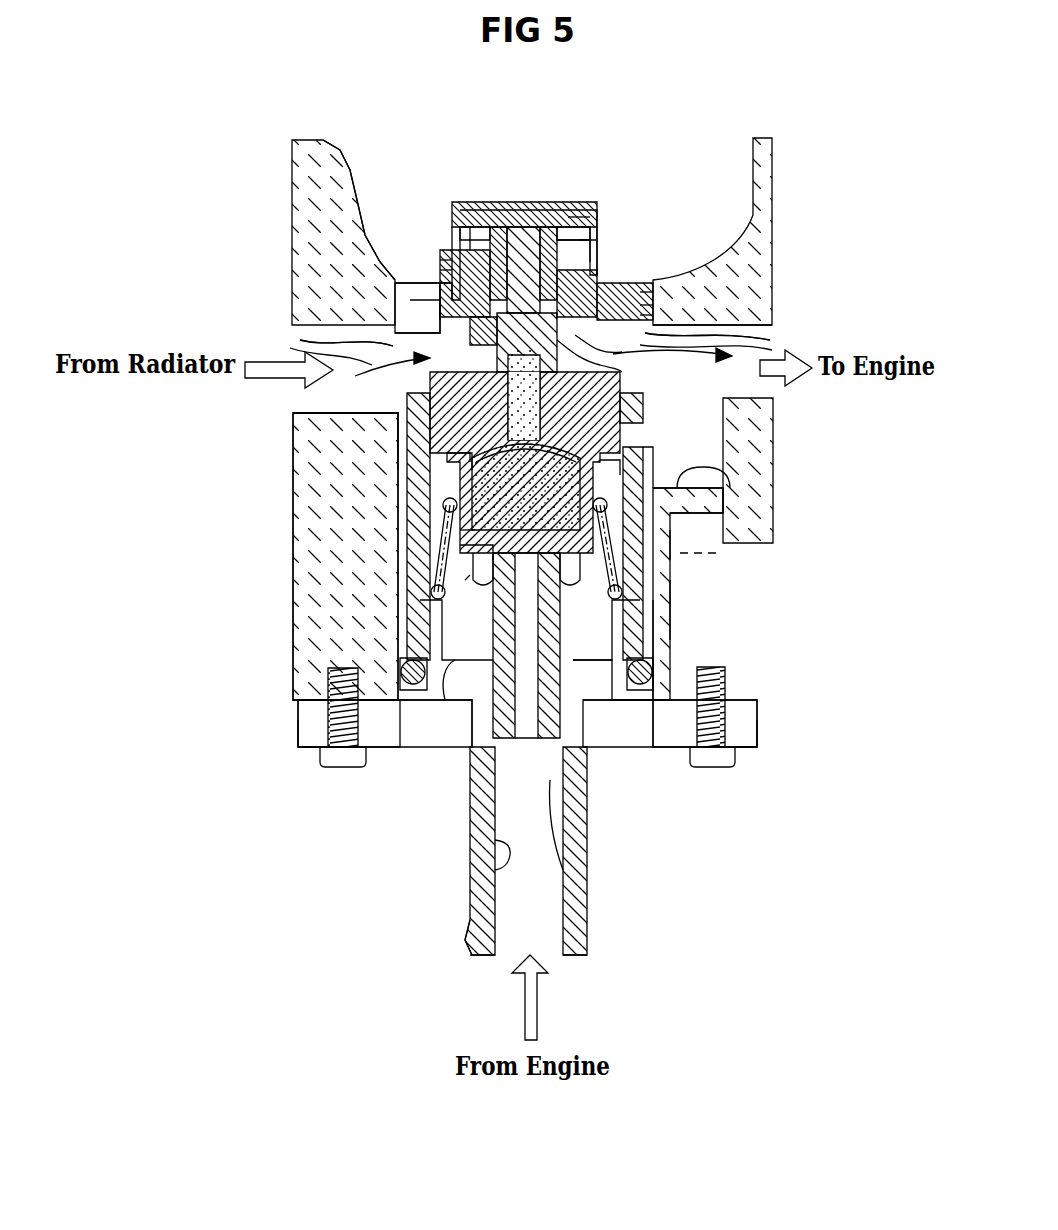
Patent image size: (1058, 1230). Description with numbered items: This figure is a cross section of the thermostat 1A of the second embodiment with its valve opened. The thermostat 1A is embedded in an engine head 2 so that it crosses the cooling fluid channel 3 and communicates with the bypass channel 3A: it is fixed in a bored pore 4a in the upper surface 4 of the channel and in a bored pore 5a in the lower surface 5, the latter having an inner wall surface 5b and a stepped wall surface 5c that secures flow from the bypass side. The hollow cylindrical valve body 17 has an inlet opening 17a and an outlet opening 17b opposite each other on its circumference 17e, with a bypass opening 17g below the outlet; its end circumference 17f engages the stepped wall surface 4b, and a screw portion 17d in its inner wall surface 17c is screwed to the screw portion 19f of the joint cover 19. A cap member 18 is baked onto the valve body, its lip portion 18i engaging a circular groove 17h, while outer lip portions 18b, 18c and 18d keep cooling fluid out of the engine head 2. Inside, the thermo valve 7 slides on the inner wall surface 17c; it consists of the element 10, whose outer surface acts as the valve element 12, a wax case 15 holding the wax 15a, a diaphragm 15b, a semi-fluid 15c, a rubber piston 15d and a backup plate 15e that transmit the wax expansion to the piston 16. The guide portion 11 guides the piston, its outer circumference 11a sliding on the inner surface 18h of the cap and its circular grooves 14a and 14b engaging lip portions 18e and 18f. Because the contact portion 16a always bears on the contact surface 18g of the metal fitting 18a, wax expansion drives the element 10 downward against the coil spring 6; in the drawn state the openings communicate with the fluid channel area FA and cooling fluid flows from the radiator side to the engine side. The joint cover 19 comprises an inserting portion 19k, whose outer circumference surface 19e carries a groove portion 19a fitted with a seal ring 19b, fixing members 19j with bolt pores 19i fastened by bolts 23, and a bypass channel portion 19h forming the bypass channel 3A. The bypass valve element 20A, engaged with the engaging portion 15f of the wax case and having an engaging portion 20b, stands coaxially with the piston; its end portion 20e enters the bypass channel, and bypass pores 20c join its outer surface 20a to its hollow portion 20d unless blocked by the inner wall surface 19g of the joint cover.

The thermostat 1A is at (370, 855).
The engine head 2 is at (770, 168).
The cooling fluid channel 3 is at (825, 318).
The bypass channel 3A is at (575, 922).
The upper surface 4 is at (300, 338).
The bored pore 4a is at (413, 317).
The stepped wall surface 4b is at (440, 268).
The lower surface 5 is at (330, 420).
The bored pore 5a is at (672, 625).
The inner wall surface 5b is at (397, 452).
The stepped wall surface 5c is at (690, 487).
The coil spring 6 is at (703, 553).
The thermo valve 7 is at (438, 592).
The element 10 is at (406, 396).
The valve element 12 is at (640, 433).
The guide portion 11 is at (465, 235).
The outer circumference 11a is at (557, 345).
The circular groove 14a is at (452, 268).
The circular groove 14b is at (492, 345).
The wax case 15 is at (447, 535).
The wax 15a is at (653, 527).
The diaphragm 15b is at (450, 460).
The semi-fluid 15c is at (458, 485).
The rubber piston 15d is at (440, 277).
The backup plate 15e is at (440, 272).
The engaging portion 15f is at (462, 580).
The piston 16 is at (547, 220).
The contact portion 16a is at (487, 225).
The valve body 17 is at (440, 300).
The inlet opening 17a is at (405, 340).
The outlet opening 17b is at (645, 408).
The inner wall surface 17c is at (660, 535).
The screw portion 17d is at (405, 672).
The circumference 17e is at (470, 580).
The end circumference 17f is at (580, 267).
The bypass opening 17g is at (648, 450).
The circular groove 17h is at (440, 285).
The cap member 18 is at (448, 205).
The metal fitting 18a is at (587, 193).
The lip portion 18b is at (577, 217).
The lip portion 18c is at (593, 280).
The lip portion 18d is at (653, 297).
The lip portion 18e is at (577, 240).
The lip portion 18f is at (660, 330).
The contact surface 18g is at (583, 200).
The inner surface 18h is at (553, 210).
The lip portion 18i is at (653, 308).
The joint cover 19 is at (683, 747).
The groove portion 19a is at (407, 733).
The seal ring 19b is at (330, 700).
The outer circumference surface 19e is at (758, 713).
The screw portion 19f is at (653, 665).
The inner wall surface 19g is at (495, 860).
The bypass channel portion 19h is at (472, 893).
The bolt pore 19i is at (312, 752).
The fixing member 19j is at (300, 745).
The inserting portion 19k is at (635, 747).
The bypass valve element 20A is at (442, 660).
The outer surface 20a is at (573, 700).
The engaging portion 20b is at (640, 600).
The bypass pore 20c is at (482, 840).
The hollow portion 20d is at (478, 670).
The end portion 20e is at (533, 888).
The bolt 23 is at (345, 765).
The fluid channel area FA is at (660, 340).